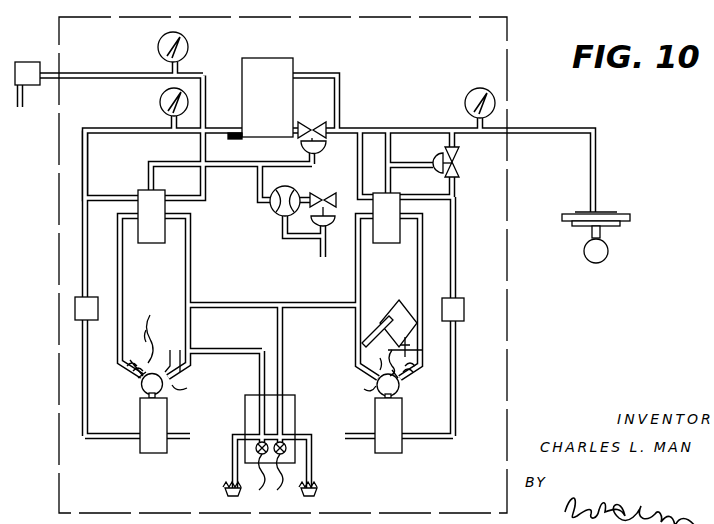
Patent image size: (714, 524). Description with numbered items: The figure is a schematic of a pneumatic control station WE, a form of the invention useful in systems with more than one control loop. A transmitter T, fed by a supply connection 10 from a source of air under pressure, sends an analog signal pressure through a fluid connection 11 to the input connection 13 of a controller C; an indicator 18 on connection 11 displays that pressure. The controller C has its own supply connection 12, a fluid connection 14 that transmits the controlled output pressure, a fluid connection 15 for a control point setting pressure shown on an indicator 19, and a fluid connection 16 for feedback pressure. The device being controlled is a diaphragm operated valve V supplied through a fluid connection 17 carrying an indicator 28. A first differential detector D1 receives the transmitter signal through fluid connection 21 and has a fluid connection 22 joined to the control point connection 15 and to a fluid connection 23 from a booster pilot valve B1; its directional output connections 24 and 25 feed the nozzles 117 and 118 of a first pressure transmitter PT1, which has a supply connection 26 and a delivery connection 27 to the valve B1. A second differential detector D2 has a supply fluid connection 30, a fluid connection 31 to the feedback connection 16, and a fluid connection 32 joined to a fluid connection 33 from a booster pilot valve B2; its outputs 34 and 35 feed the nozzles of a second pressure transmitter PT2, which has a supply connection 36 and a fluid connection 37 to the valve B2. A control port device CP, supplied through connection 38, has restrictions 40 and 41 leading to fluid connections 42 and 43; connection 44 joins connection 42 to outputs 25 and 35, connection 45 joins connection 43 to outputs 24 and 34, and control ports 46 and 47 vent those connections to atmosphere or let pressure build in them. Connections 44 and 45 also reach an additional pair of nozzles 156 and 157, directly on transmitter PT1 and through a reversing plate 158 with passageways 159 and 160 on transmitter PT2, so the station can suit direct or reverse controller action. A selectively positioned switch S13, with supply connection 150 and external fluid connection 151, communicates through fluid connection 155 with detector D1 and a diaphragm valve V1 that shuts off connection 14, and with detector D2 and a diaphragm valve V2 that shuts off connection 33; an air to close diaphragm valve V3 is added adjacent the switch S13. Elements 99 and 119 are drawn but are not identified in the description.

The transmitter T is at (27, 62).
The supply connection 10 is at (23, 99).
The fluid connection 11 is at (91, 72).
The indicator 18 is at (185, 39).
The indicator 19 is at (160, 100).
The input connection 13 is at (210, 73).
The fluid connection 15 is at (212, 125).
The fluid connection 21 is at (205, 189).
The fluid connection 22 is at (113, 197).
The fluid connection 23 is at (85, 263).
The fluid delivery connection 27 is at (85, 351).
The pressure fluid supply connection 26 is at (175, 441).
The controller C is at (262, 63).
The supply connection 12 is at (240, 135).
The fluid connection 14 is at (295, 129).
The diaphragm operated valve V1 is at (330, 147).
The fluid connection 16 is at (312, 72).
The fluid connection 17 is at (554, 127).
The indicator 28 is at (475, 89).
The diaphragm operated valve V2 is at (460, 168).
The fluid connection 30 is at (390, 177).
The fluid connection 32 is at (430, 188).
The fluid connection 155 is at (223, 160).
The supply connection 150 is at (274, 161).
The switch S13 is at (279, 212).
The air to close diaphragm valve V3 is at (323, 194).
The external fluid connection 151 is at (318, 248).
The fluid connection 31 is at (357, 208).
The directional output connection 35 is at (356, 246).
The first differential detector D1 is at (161, 222).
The second differential detector D2 is at (396, 224).
The directional output connection 24 is at (120, 228).
The directional output connection 25 is at (190, 246).
The directional output connection 34 is at (420, 229).
The fluid connection 33 is at (455, 254).
The fluid connection 37 is at (456, 356).
The pressure fluid supply connection 36 is at (364, 441).
The booster pilot valve B1 is at (75, 308).
The booster pilot valve B2 is at (463, 306).
The fluid connection 45 is at (247, 293).
The fluid connection 44 is at (233, 349).
The fluid connection 42 is at (260, 378).
The fluid connection 43 is at (283, 385).
The control port device CP is at (288, 427).
The restriction 40 is at (256, 448).
The restriction 41 is at (284, 449).
The flexible line 99 is at (251, 485).
The pressure fluid supply connection 38 is at (285, 484).
The control port 46 is at (220, 493).
The control port 47 is at (318, 498).
The first pressure transmitter PT1 is at (156, 419).
The second pressure transmitter PT2 is at (391, 448).
The nozzle 156 is at (375, 359).
The nozzle 157 is at (132, 368).
The nozzle 117 is at (138, 383).
The nozzle 118 is at (170, 388).
The linkage 119 is at (260, 369).
The reversing plate 158 is at (397, 316).
The passageway 159 is at (373, 324).
The passageway 160 is at (407, 347).
The control station WE is at (497, 360).
The diaphragm operated valve V is at (596, 237).